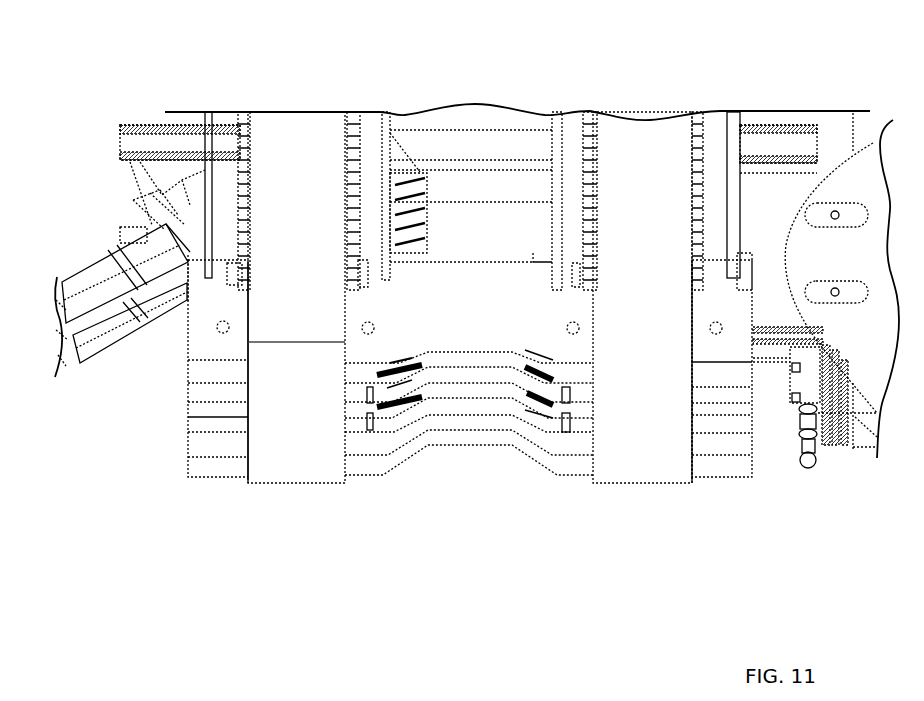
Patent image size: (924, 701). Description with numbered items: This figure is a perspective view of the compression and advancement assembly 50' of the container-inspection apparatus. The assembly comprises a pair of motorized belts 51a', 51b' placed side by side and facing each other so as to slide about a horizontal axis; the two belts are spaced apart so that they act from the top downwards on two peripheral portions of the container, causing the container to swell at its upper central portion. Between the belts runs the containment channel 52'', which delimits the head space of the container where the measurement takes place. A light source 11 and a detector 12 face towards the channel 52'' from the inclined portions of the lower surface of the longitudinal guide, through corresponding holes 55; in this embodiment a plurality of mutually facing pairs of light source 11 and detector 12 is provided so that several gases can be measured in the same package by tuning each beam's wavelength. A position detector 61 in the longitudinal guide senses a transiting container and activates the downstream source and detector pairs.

The light source 11 is at (777, 195).
The detector 12 is at (178, 188).
The mounting assembly 50' is at (430, 410).
The motorized belt 51a' is at (303, 250).
The motorized belt 51b' is at (651, 268).
The containment channel 52'' is at (469, 398).
The holes 55 is at (413, 385).
The position detector 61 is at (408, 352).